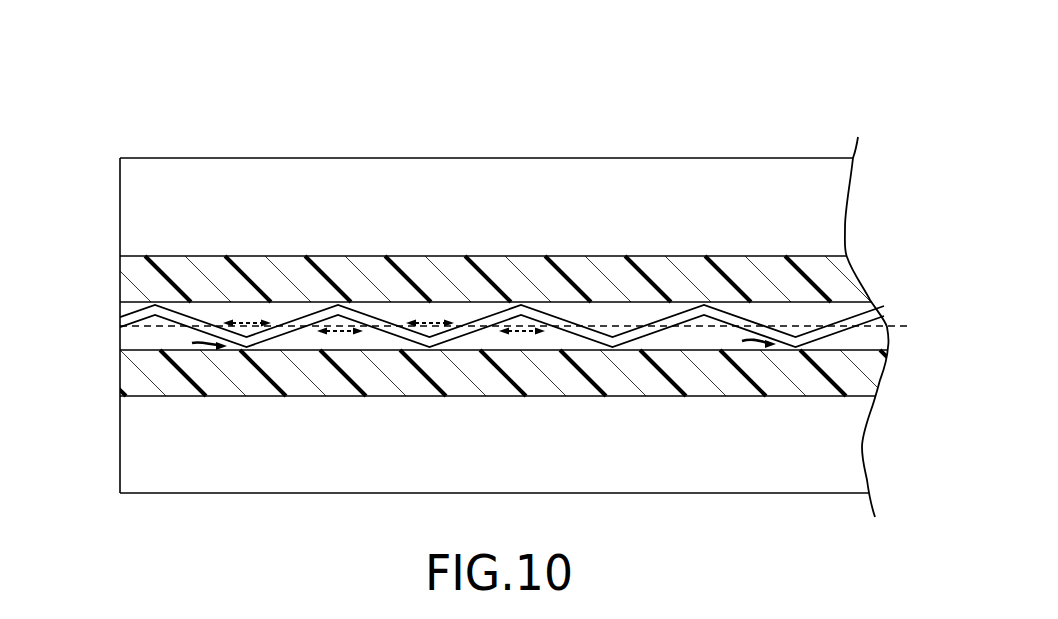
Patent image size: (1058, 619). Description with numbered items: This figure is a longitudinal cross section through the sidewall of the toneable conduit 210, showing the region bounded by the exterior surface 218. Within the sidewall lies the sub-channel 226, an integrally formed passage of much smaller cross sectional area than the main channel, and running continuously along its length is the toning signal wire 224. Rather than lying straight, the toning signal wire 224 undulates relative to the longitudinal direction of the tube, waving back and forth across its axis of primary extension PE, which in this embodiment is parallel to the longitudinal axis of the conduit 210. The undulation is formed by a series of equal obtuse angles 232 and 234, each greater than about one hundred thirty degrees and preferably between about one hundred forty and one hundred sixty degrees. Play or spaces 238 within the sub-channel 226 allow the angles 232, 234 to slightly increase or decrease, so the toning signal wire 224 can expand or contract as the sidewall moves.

The toneable conduit 210 is at (636, 121).
The exterior surface 218 is at (214, 208).
The toning signal wire 224 is at (578, 324).
The sub-channel 226 is at (147, 351).
The obtuse angle 232 is at (430, 319).
The obtuse angle 234 is at (521, 336).
The space 238 is at (192, 343).
The axis of primary extension PE is at (893, 325).